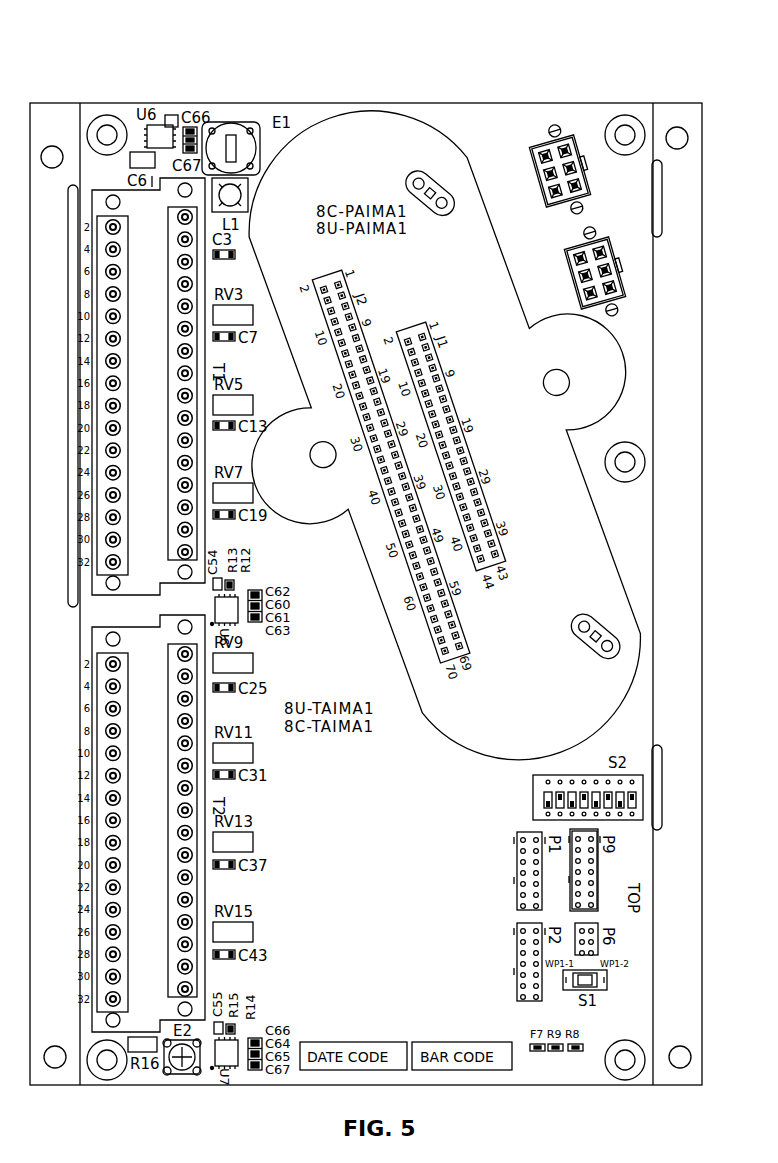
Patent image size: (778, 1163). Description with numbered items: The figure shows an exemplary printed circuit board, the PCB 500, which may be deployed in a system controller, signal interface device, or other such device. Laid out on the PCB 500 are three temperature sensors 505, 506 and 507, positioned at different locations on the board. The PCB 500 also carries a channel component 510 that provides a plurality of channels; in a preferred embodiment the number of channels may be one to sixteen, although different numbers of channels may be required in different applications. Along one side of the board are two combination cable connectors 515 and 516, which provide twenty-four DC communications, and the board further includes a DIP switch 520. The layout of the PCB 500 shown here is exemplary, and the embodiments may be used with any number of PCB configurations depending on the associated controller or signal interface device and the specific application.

The PCB 500 is at (609, 44).
The temperature sensor 505 is at (248, 187).
The temperature sensor 506 is at (212, 600).
The temperature sensor 507 is at (214, 1068).
The channel component 510 is at (143, 576).
The combination cable connector 515 is at (585, 162).
The combination cable connector 516 is at (618, 280).
The DIP switch 520 is at (535, 797).